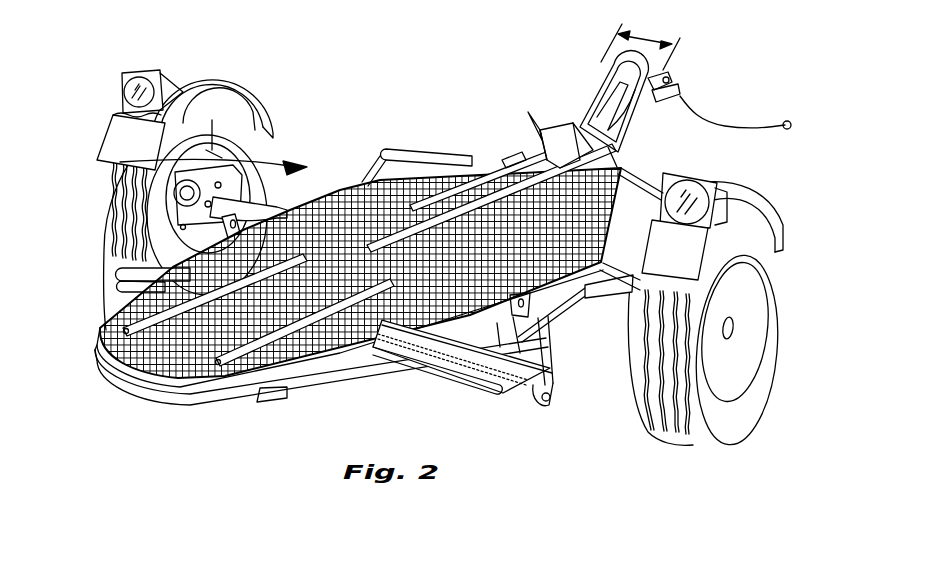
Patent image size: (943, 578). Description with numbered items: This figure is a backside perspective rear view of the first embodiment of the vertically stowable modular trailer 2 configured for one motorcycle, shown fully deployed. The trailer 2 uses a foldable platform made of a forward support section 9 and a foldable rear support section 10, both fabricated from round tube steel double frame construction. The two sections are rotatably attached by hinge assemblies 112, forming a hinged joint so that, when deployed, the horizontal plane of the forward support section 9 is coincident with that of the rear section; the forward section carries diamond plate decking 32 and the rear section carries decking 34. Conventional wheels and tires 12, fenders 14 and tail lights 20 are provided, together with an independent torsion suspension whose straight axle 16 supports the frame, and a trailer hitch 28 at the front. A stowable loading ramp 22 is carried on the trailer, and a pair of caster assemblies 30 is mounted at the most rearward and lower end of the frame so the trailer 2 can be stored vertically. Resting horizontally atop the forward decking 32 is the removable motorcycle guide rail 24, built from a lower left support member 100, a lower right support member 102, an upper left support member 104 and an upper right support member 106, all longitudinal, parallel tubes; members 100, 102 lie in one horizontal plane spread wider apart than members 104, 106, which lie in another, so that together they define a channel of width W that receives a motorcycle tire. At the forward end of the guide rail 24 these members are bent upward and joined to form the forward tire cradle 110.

The modular trailer 2 is at (108, 54).
The forward support section 9 is at (359, 248).
The forward decking 32 is at (343, 187).
The foldable rear support section 10 is at (163, 398).
The wheels and tires 12 is at (112, 224).
The fenders 14 is at (205, 84).
The straight axle 16 is at (598, 303).
The tail lights 20 is at (122, 88).
The stowable loading ramp 22 is at (457, 383).
The removable motorcycle guide rail 24 is at (530, 150).
The trailer hitch 28 is at (680, 97).
The caster assemblies 30 is at (543, 405).
The rear decking 34 is at (127, 363).
The lower left support member 100 is at (382, 150).
The lower right support member 102 is at (387, 140).
The upper left support member 104 is at (480, 167).
The upper right support member 106 is at (512, 143).
The forward tire cradle 110 is at (598, 80).
The hinge assemblies 112 is at (122, 270).